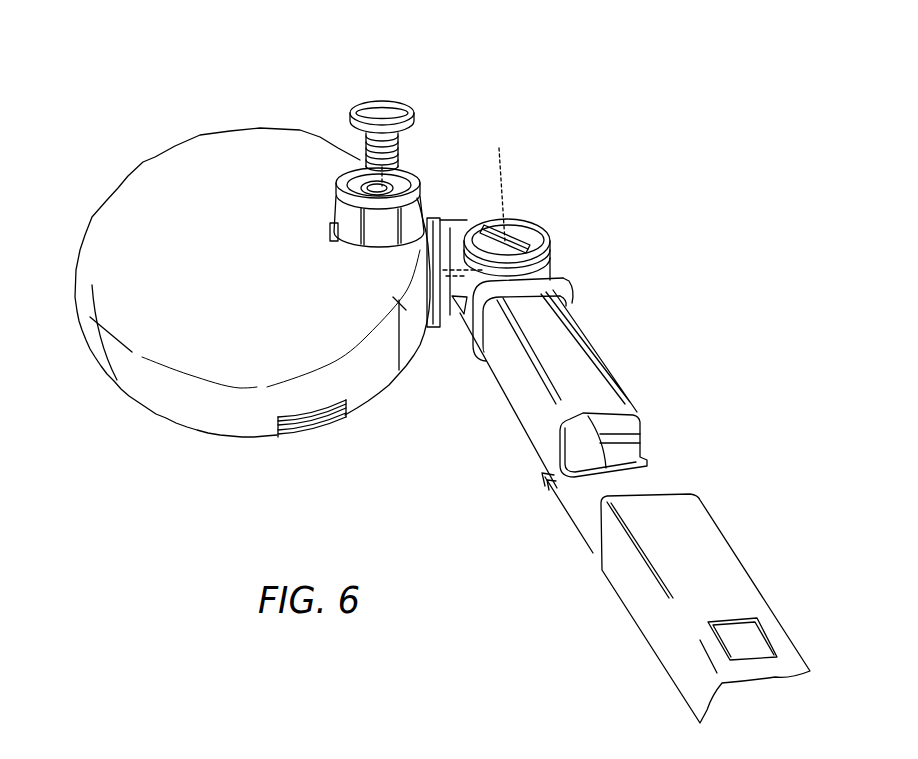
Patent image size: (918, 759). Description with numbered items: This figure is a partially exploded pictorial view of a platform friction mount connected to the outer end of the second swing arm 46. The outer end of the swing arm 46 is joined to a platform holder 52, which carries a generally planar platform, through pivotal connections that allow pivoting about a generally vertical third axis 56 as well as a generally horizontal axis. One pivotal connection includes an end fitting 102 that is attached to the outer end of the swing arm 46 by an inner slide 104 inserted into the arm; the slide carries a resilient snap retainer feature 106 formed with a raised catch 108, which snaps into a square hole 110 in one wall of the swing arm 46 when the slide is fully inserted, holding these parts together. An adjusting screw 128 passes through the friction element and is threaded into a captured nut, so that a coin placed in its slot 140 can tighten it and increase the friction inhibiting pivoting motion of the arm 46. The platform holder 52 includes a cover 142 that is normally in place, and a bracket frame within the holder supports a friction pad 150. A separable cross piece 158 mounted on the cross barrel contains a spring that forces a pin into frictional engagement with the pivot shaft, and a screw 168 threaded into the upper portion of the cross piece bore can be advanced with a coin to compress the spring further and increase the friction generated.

The second swing arm 46 is at (691, 498).
The platform holder 52 is at (90, 354).
The third axis 56 is at (499, 170).
The end fitting 102 is at (562, 276).
The inner slide 104 is at (515, 385).
The resilient snap retainer feature 106 is at (558, 344).
The raised catch 108 is at (617, 417).
The square hole 110 is at (733, 633).
The adjusting screw 128 is at (518, 227).
The slot 140 is at (533, 247).
The cover 142 is at (138, 178).
The friction pad 150 is at (290, 431).
The separable cross piece 158 is at (337, 192).
The screw 168 is at (372, 103).